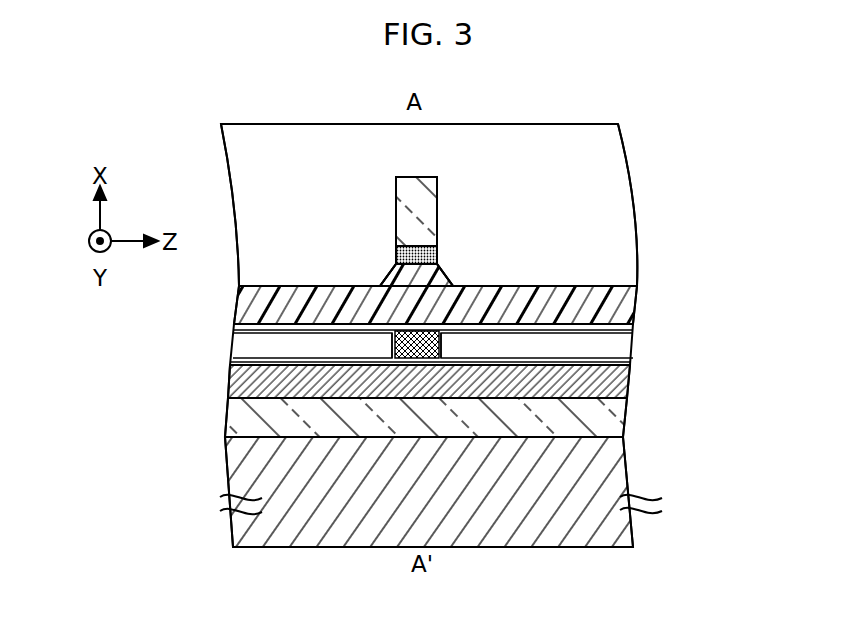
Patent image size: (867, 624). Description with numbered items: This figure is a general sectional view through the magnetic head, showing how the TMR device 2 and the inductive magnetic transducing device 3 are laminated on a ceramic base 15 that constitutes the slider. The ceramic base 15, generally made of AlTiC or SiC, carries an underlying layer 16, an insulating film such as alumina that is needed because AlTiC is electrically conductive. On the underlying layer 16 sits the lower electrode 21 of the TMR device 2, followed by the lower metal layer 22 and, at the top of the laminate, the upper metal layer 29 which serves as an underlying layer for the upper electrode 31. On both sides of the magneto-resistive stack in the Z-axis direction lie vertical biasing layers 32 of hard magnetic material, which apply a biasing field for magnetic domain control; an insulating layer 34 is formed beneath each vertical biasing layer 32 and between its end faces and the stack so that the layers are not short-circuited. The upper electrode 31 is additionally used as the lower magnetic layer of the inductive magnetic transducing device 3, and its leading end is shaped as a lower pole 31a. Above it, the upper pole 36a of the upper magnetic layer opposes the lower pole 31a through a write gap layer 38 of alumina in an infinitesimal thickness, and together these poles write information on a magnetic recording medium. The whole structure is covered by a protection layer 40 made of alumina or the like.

The TMR device 2 is at (422, 364).
The inductive magnetic transducing device 3 is at (435, 206).
The ceramic base 15 is at (608, 462).
The underlying layer 16 is at (610, 418).
The lower electrode 21 is at (610, 385).
The lower metal layer (lower layer) 22 is at (232, 390).
The upper metal layer 29 is at (232, 330).
The upper electrode 31 is at (625, 310).
The lower pole 31a is at (418, 297).
The vertical biasing layer 32 is at (243, 345).
The insulating layer 34 is at (277, 358).
The upper pole 36a is at (438, 205).
The write gap layer 38 is at (438, 253).
The protection layer 40 is at (615, 175).